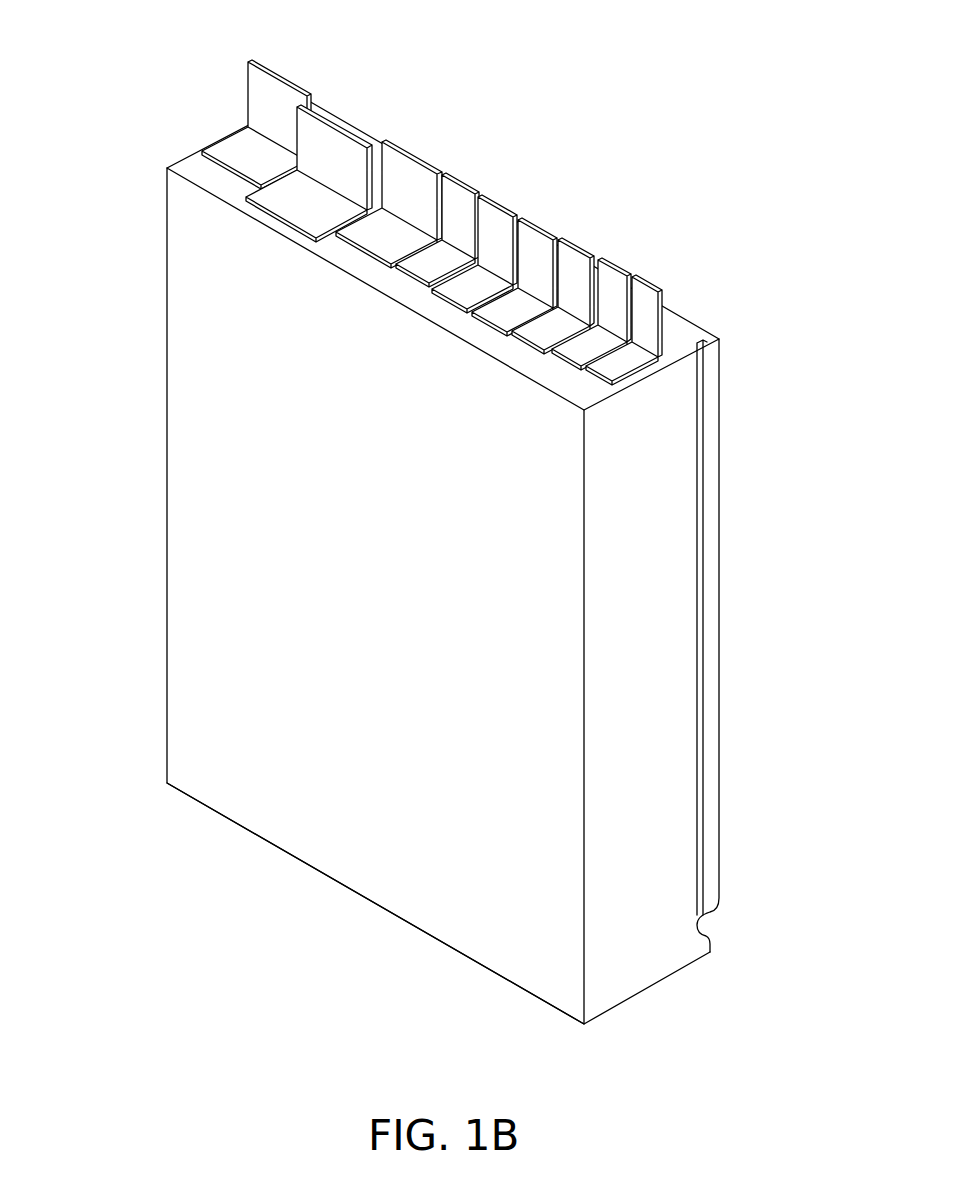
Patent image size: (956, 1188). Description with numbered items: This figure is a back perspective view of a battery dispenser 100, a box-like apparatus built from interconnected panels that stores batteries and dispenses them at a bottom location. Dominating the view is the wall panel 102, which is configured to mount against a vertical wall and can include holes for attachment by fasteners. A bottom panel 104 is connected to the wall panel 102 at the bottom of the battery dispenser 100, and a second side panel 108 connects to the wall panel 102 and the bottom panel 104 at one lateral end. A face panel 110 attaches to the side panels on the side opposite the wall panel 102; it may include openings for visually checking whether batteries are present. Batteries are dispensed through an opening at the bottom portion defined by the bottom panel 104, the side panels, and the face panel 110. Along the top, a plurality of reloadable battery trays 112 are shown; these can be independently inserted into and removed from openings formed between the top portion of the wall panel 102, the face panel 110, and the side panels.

The battery dispenser 100 is at (436, 550).
The wall panel 102 is at (185, 468).
The bottom panel 104 is at (530, 993).
The second side panel 108 is at (662, 893).
The face panel 110 is at (713, 635).
The reloadable battery trays 112 is at (445, 207).